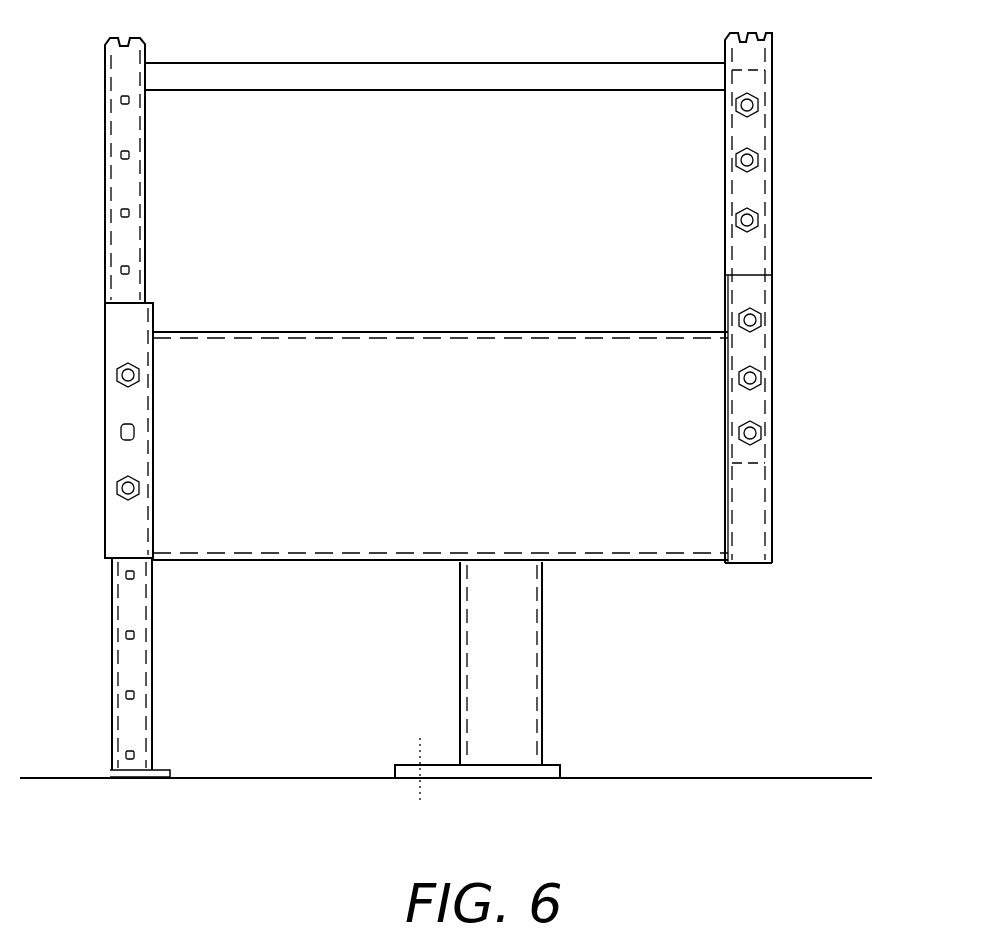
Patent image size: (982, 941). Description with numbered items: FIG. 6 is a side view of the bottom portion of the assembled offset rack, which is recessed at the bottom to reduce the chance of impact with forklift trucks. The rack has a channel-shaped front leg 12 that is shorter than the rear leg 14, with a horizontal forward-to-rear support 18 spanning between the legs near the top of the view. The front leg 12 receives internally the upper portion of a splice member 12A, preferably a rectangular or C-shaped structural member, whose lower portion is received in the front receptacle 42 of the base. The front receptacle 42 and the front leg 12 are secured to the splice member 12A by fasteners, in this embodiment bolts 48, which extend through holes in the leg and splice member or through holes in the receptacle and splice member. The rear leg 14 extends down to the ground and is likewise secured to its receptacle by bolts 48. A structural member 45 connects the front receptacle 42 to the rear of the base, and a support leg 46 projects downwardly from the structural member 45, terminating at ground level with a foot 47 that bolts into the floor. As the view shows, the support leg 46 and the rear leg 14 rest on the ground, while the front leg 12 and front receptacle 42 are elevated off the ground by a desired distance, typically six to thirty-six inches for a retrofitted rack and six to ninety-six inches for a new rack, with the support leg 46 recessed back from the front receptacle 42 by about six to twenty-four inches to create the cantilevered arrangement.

The front leg 12 is at (772, 50).
The splice member 12A is at (725, 250).
The rear leg 14 is at (105, 133).
The horizontal forward-to-rear support 18 is at (338, 62).
The front receptacle 42 is at (775, 512).
The structural member 45 is at (375, 338).
The support leg 46 is at (543, 668).
The foot 47 is at (453, 764).
The bolts 48 is at (117, 488).